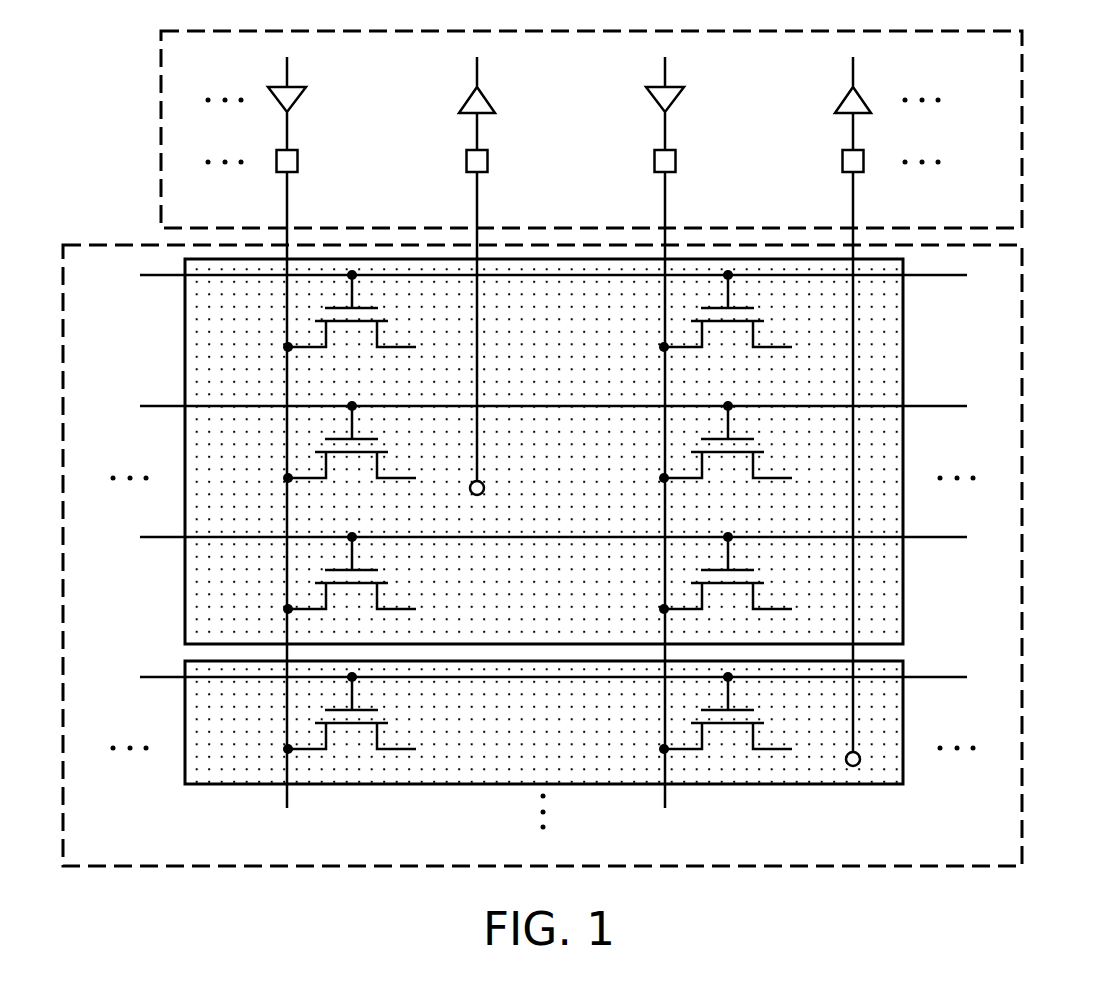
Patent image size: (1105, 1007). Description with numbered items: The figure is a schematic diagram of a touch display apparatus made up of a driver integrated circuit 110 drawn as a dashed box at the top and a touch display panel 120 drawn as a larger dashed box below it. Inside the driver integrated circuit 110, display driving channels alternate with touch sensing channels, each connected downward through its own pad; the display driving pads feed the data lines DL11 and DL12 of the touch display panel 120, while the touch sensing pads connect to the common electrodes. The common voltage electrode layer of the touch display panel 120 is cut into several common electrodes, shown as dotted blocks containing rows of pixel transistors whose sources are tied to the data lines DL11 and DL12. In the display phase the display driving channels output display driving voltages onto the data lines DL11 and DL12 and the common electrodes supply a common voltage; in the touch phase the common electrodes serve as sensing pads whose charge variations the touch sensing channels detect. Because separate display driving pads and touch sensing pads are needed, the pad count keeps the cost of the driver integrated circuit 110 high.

The driver integrated circuit 110 is at (1023, 100).
The touch display panel 120 is at (1023, 481).
The data line DL11 is at (288, 793).
The data line DL12 is at (665, 793).